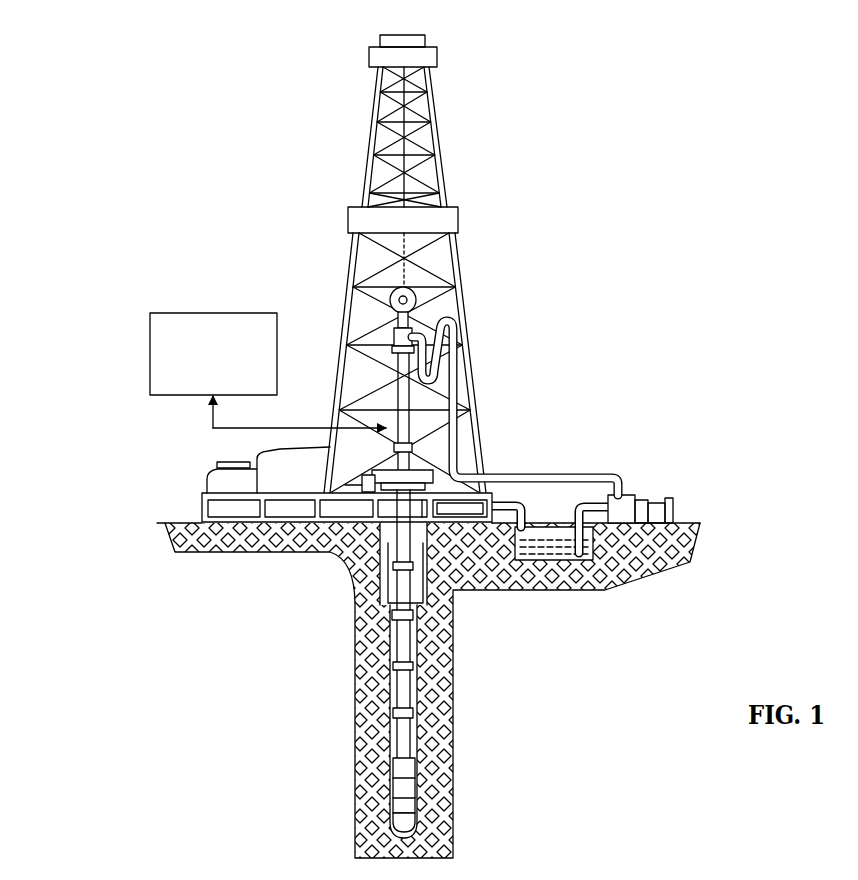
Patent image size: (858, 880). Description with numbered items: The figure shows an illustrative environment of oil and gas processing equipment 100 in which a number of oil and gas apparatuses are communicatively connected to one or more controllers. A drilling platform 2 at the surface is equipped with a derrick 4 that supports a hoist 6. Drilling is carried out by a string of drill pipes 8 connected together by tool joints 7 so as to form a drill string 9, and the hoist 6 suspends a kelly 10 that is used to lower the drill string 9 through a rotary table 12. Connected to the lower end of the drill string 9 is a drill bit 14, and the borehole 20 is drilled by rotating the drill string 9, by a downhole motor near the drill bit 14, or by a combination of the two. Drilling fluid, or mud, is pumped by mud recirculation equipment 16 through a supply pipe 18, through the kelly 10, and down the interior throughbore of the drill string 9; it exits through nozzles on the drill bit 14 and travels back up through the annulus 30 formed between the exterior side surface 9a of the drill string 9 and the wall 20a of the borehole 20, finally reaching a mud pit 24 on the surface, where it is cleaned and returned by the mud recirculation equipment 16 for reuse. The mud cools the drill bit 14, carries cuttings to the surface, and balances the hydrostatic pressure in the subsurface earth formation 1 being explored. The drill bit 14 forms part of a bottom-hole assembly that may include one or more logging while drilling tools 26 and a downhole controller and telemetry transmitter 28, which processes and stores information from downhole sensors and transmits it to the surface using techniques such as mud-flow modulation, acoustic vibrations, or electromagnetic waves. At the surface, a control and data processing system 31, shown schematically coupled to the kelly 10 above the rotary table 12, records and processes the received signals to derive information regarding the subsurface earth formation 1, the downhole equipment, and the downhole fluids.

The oil and gas processing equipment 100 is at (578, 245).
The subsurface earth formation 1 is at (450, 646).
The drilling platform 2 is at (202, 495).
The derrick 4 is at (444, 142).
The hoist 6 is at (392, 306).
The tool joints 7 is at (405, 616).
The drill pipes 8 is at (403, 586).
The drill string 9 is at (370, 624).
The exterior side surface of the drill string 9a is at (403, 683).
The kelly 10 is at (352, 493).
The rotary table 12 is at (420, 470).
The drill bit 14 is at (396, 822).
The mud recirculation equipment 16 is at (630, 495).
The supply pipe 18 is at (548, 473).
The borehole 20 is at (370, 782).
The wall of the borehole 20a is at (400, 721).
The mud pit 24 is at (545, 540).
The logging while drilling tool 26 is at (406, 792).
The downhole controller and telemetry transmitter 28 is at (404, 770).
The annulus 30 is at (417, 692).
The control and data processing system 31 is at (238, 313).